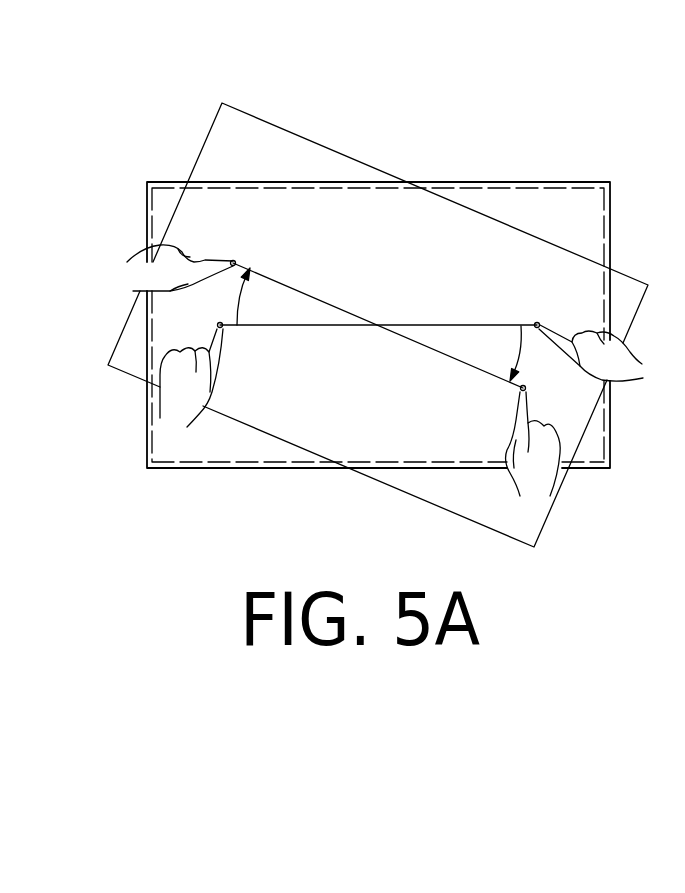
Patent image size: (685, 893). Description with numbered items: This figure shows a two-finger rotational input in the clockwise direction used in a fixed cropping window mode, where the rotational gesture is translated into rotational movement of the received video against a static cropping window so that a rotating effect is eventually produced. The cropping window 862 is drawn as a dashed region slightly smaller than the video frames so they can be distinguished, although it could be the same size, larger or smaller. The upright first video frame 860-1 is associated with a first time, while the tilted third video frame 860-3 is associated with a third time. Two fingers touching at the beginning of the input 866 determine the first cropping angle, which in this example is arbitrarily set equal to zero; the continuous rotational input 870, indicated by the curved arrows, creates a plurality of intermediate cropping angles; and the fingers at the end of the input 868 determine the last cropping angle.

The first video frame 860-1 is at (552, 182).
The third video frame 860-3 is at (303, 136).
The cropping window 862 is at (325, 189).
The beginning of the input 866 is at (217, 353).
The end of the input 868 is at (214, 267).
The continuous rotational input 870 is at (519, 348).